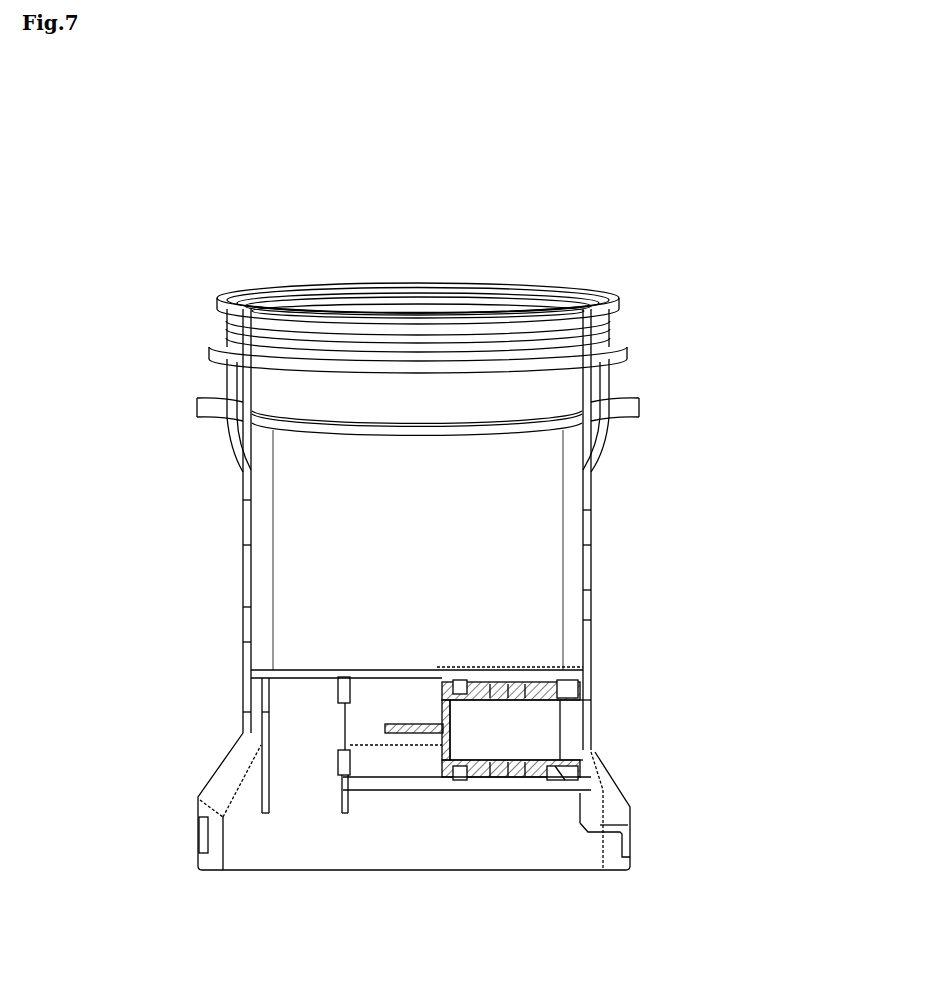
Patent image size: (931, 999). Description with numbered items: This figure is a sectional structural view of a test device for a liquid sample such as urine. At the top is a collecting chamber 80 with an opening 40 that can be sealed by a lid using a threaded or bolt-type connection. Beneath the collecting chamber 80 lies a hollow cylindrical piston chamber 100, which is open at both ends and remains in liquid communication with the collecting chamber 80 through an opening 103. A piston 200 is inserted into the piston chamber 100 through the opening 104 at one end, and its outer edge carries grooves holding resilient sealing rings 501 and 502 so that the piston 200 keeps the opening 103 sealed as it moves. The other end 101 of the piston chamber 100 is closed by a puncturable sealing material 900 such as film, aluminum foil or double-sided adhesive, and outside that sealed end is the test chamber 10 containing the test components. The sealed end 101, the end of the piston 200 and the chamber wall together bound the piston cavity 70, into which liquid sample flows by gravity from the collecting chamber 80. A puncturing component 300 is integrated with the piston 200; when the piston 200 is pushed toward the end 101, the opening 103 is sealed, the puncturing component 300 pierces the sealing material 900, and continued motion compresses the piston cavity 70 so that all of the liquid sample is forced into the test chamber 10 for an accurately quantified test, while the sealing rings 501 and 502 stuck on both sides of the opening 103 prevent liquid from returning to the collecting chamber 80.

The test chamber 10 is at (290, 826).
The opening 40 is at (560, 318).
The piston cavity 70 is at (376, 748).
The collecting chamber 80 is at (558, 487).
The piston chamber 100 is at (543, 774).
The other end of the piston chamber 101 is at (347, 765).
The opening 103 is at (423, 673).
The opening of the piston chamber 104 is at (572, 721).
The piston 200 is at (580, 693).
The puncturing component 300 is at (397, 725).
The resilient sealing ring 501 is at (457, 777).
The resilient sealing ring 502 is at (567, 777).
The sealing material 900 is at (348, 728).